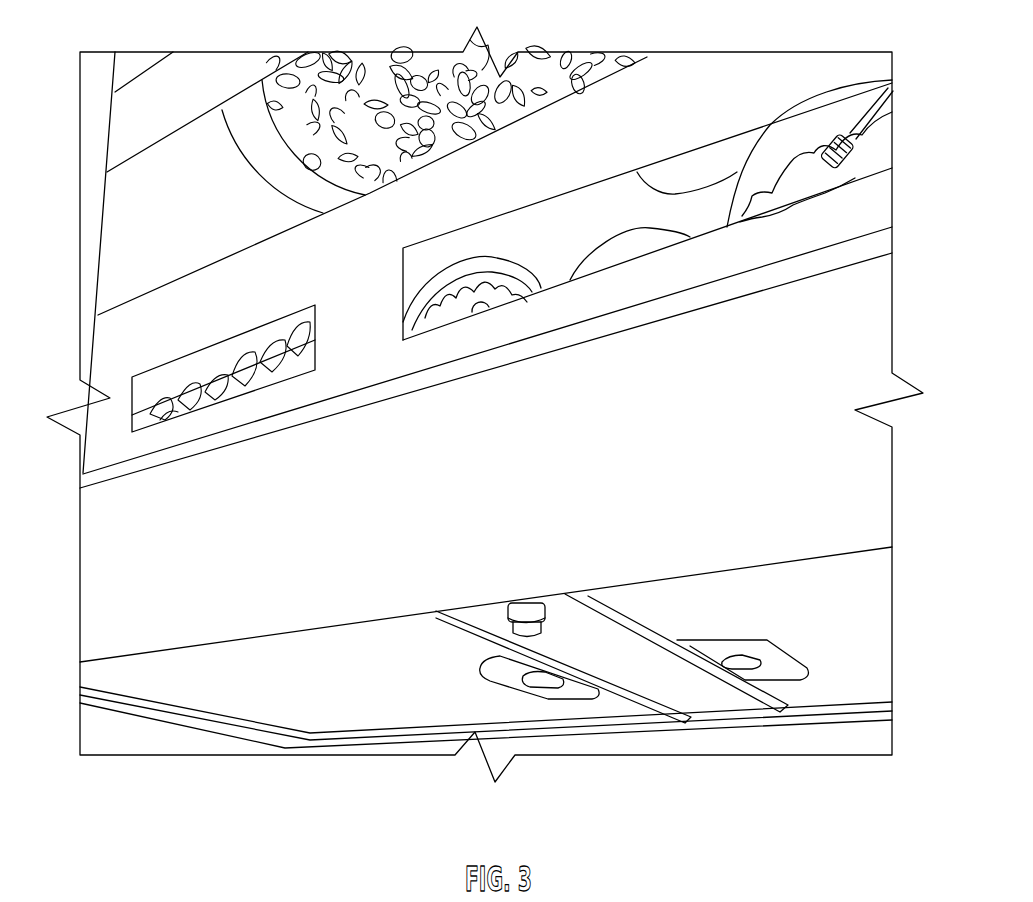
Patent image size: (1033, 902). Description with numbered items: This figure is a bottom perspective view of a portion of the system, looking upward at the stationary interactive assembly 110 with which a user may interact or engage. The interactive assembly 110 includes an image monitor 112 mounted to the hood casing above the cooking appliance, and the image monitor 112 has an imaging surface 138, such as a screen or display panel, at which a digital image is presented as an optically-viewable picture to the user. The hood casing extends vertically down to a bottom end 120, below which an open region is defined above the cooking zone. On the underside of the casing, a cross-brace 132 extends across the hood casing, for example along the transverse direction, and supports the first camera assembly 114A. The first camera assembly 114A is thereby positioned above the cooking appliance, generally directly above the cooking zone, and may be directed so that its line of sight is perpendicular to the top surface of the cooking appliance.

The interactive assembly 110 is at (893, 241).
The image monitor 112 is at (93, 558).
The first camera assembly 114A is at (506, 616).
The bottom end 120 is at (725, 726).
The cross-brace 132 is at (632, 676).
The imaging surface 138 is at (120, 348).